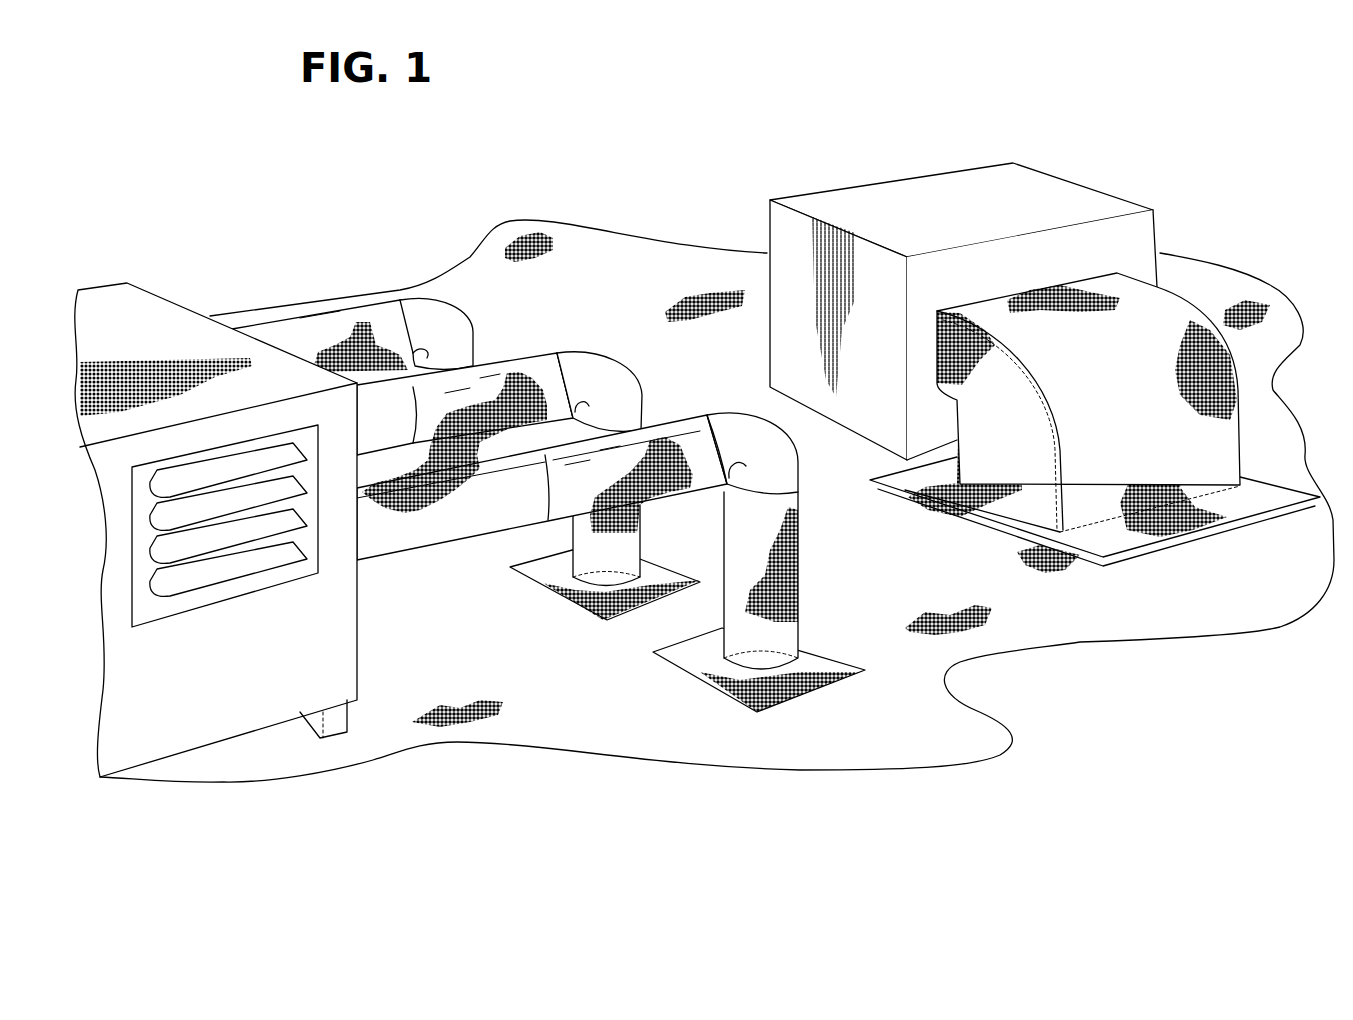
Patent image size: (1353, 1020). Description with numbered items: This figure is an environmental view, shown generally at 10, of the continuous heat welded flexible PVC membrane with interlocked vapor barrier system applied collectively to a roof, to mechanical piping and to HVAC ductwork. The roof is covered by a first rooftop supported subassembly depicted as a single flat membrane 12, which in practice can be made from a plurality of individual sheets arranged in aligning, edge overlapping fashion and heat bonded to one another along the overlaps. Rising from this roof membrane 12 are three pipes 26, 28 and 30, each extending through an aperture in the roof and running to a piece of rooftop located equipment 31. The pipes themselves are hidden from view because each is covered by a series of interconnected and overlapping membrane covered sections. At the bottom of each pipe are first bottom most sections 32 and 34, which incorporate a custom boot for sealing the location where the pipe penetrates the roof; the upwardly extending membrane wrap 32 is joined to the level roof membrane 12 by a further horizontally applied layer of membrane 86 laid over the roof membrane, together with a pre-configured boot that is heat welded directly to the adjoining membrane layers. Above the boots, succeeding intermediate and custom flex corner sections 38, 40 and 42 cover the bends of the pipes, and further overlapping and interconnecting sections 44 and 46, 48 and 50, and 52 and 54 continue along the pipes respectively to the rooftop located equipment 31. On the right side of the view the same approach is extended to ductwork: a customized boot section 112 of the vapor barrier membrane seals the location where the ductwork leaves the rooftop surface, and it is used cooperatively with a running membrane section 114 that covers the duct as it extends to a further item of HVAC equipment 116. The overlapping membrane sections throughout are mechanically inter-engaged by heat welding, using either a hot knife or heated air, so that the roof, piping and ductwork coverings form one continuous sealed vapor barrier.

The continuous heat welded flexible PVC membrane with interlocked vapor barrier syst 10 is at (626, 192).
The flat roof membrane 12 is at (584, 246).
The pipe 26 is at (618, 529).
The pipe 28 is at (522, 429).
The pipe 30 is at (377, 294).
The rooftop located equipment 31 is at (145, 312).
The first bottom most membrane section with custom boot 32 is at (800, 555).
The first bottom most membrane section with custom boot 34 is at (595, 548).
The intermediate custom flex corner section 38 is at (778, 455).
The intermediate custom flex corner section 40 is at (625, 380).
The intermediate custom flex corner section 42 is at (455, 332).
The overlapping and interconnecting membrane section 44 is at (628, 469).
The overlapping and interconnecting membrane section 46 is at (493, 519).
The overlapping and interconnecting membrane section 48 is at (483, 399).
The overlapping and interconnecting membrane section 50 is at (392, 436).
The overlapping and interconnecting membrane section 52 is at (403, 337).
The overlapping and interconnecting membrane section 54 is at (263, 332).
The horizontally applied layer of membrane 86 is at (817, 660).
The customized boot section 112 is at (1100, 527).
The running membrane section 114 is at (1172, 315).
The HVAC equipment 116 is at (945, 192).